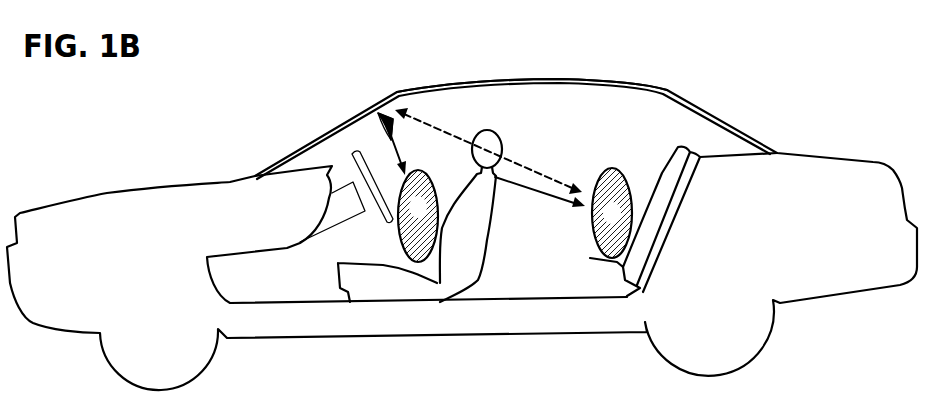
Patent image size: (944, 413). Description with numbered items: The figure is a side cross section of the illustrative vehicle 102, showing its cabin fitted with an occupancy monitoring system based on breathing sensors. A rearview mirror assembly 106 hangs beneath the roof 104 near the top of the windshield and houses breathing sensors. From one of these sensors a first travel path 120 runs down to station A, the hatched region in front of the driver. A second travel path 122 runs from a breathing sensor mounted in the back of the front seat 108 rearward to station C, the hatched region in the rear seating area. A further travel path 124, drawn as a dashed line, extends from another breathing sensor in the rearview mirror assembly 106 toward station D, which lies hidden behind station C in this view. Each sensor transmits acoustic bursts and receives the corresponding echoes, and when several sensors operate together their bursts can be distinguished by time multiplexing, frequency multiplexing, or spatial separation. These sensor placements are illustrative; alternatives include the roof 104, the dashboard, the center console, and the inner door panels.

The vehicle 102 is at (115, 192).
The roof 104 is at (625, 82).
The rearview mirror assembly 106 is at (380, 120).
The front seat 108 is at (483, 253).
The first travel path 120 is at (408, 152).
The second travel path 122 is at (547, 196).
The travel path 124 is at (527, 167).